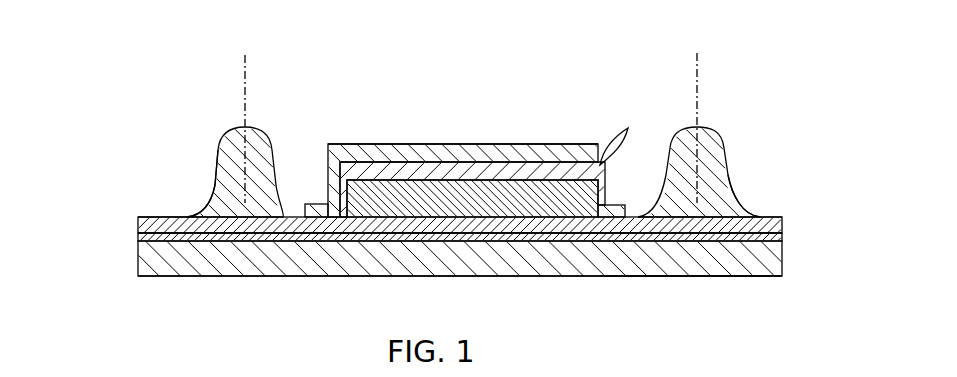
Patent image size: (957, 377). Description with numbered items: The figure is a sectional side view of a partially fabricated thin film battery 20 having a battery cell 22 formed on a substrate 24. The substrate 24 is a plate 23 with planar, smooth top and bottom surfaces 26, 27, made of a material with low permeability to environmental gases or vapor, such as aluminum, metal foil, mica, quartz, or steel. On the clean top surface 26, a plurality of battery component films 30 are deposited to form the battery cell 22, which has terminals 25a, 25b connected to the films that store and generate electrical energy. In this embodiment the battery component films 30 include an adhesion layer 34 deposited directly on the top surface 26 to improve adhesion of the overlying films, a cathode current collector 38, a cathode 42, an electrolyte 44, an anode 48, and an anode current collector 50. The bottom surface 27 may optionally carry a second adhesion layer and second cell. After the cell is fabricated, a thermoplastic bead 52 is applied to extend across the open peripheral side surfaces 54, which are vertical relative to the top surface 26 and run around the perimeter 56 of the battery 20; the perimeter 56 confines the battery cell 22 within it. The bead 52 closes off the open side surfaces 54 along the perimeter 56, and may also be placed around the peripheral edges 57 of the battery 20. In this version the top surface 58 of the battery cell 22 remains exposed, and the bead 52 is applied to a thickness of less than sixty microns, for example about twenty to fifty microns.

The thin film battery 20 is at (273, 66).
The battery cell 22 is at (579, 96).
The plate 23 is at (784, 259).
The substrate 24 is at (400, 277).
The terminal 25a is at (163, 208).
The terminal 25b is at (762, 212).
The top surface 26 is at (776, 237).
The bottom surface 27 is at (627, 280).
The battery component films 30 is at (628, 128).
The adhesion layer 34 is at (491, 234).
The cathode current collector 38 is at (635, 206).
The cathode 42 is at (441, 178).
The electrolyte 44 is at (400, 161).
The anode 48 is at (347, 143).
The anode current collector 50 is at (138, 229).
The thermoplastic bead 52 is at (222, 147).
The open peripheral side surfaces 54 is at (240, 175).
The perimeter 56 is at (705, 210).
The peripheral edges 57 is at (182, 190).
The top surface 58 is at (507, 126).